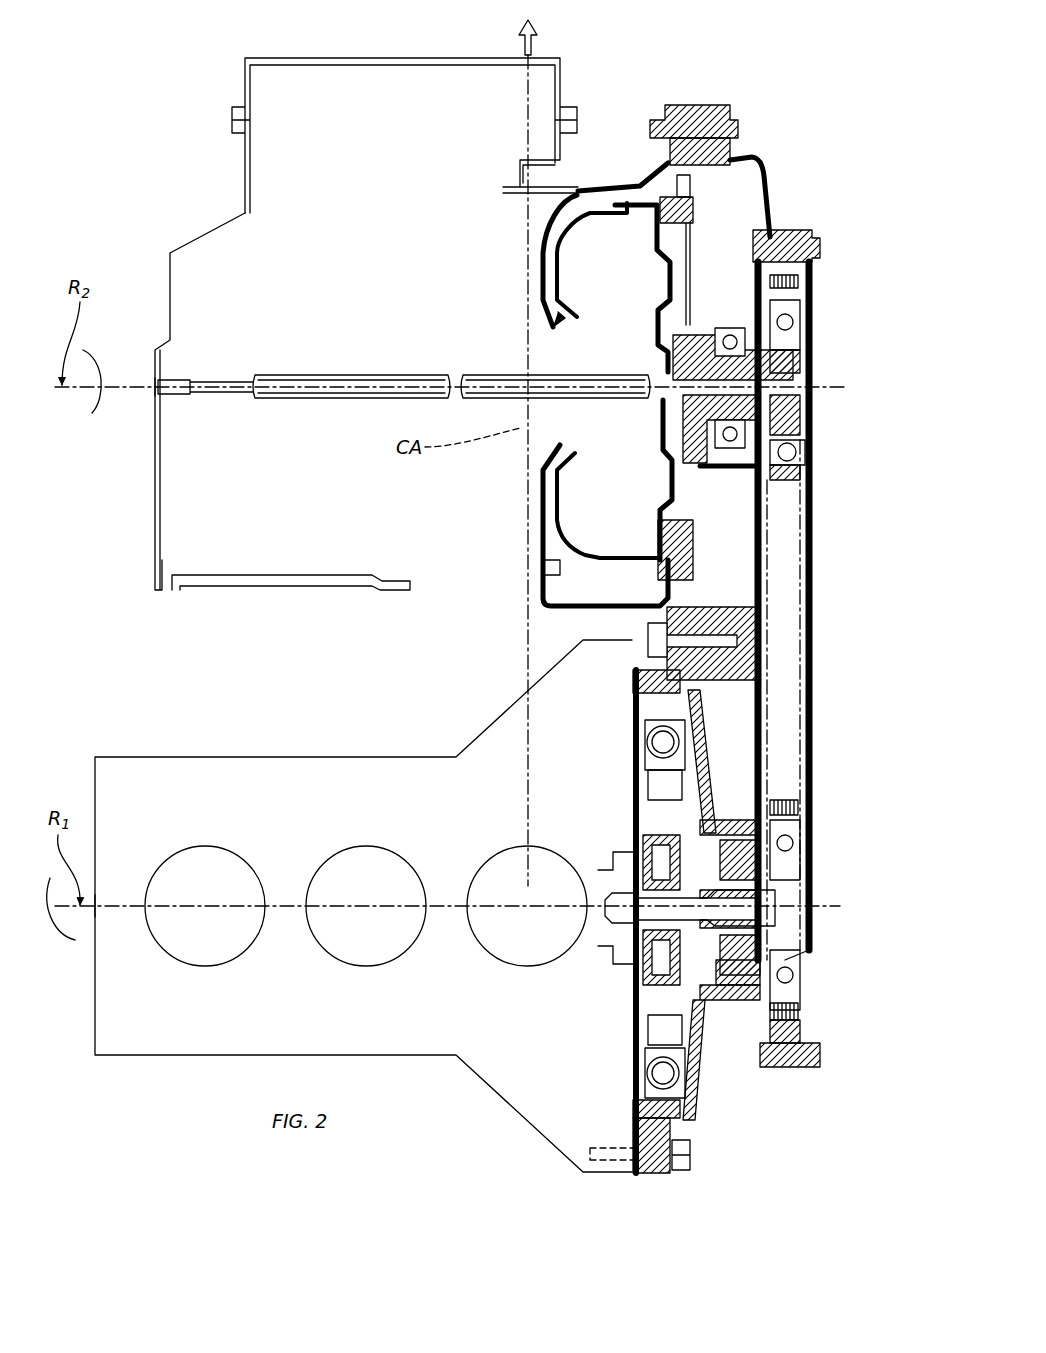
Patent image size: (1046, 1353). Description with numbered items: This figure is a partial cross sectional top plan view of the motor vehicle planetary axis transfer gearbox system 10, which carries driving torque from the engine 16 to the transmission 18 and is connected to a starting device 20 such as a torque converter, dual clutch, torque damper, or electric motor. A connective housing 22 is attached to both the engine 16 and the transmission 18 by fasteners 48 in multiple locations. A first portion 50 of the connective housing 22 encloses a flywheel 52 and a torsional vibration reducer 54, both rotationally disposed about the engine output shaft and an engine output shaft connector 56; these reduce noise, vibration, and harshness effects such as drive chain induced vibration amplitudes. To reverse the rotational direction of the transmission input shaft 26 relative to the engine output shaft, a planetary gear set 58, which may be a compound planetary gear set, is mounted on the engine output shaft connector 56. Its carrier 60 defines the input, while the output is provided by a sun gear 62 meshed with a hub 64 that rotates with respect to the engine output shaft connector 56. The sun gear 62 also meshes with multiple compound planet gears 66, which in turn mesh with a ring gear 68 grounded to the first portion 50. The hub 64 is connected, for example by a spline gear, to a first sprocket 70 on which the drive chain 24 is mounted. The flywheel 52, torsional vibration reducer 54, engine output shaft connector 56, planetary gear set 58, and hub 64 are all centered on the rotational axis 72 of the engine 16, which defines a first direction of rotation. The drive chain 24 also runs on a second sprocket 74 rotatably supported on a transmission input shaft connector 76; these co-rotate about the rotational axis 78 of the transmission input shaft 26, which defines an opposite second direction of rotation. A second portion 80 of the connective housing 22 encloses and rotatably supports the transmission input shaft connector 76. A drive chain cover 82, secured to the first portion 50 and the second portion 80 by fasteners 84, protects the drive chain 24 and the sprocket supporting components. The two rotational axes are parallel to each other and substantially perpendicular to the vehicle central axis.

The motor vehicle planetary axis transfer gearbox system 10 is at (773, 112).
The engine 16 is at (352, 757).
The transmission 18 is at (580, 83).
The starting device 20 is at (653, 285).
The connective housing 22 is at (770, 182).
The drive chain 24 is at (803, 570).
The transmission input shaft 26 is at (393, 375).
The fasteners 48 is at (650, 128).
The first portion of the connective housing 50 is at (707, 728).
The flywheel 52 is at (645, 742).
The torsional vibration reducer 54 is at (655, 768).
The engine output shaft connector 56 is at (615, 905).
The planetary gear set 58 is at (732, 806).
The carrier 60 is at (660, 985).
The sun gear 62 is at (760, 925).
The hub 64 is at (750, 905).
The compound planet gears 66 is at (755, 960).
The ring gear 68 is at (730, 975).
The first sprocket 70 is at (795, 1015).
The rotational axis of the engine 72 is at (125, 900).
The second sprocket 74 is at (800, 285).
The transmission input shaft connector 76 is at (785, 372).
The rotational axis of the transmission input shaft 78 is at (133, 380).
The second portion of the connective housing 80 is at (705, 322).
The drive chain cover 82 is at (812, 507).
The fasteners 84 is at (820, 247).